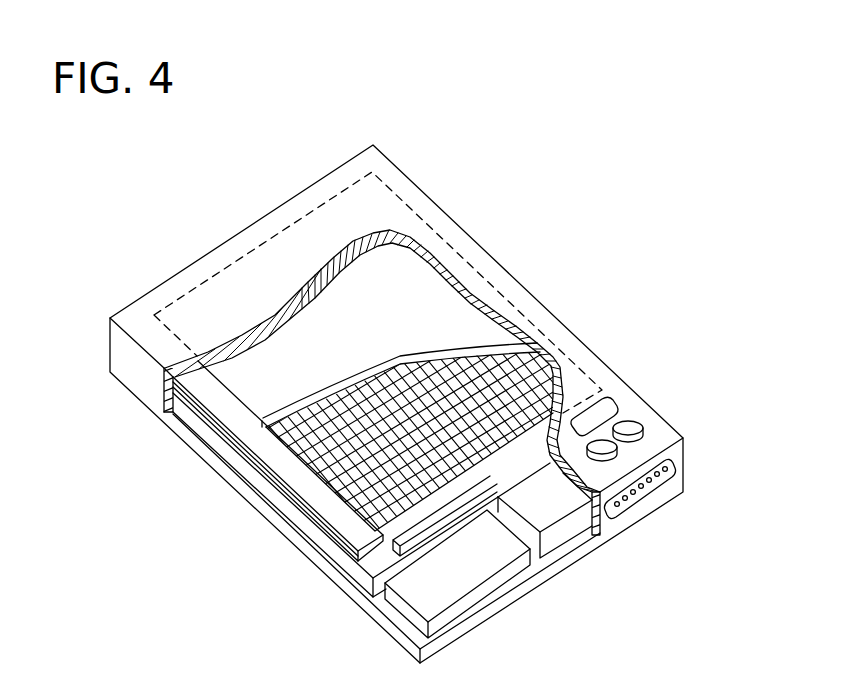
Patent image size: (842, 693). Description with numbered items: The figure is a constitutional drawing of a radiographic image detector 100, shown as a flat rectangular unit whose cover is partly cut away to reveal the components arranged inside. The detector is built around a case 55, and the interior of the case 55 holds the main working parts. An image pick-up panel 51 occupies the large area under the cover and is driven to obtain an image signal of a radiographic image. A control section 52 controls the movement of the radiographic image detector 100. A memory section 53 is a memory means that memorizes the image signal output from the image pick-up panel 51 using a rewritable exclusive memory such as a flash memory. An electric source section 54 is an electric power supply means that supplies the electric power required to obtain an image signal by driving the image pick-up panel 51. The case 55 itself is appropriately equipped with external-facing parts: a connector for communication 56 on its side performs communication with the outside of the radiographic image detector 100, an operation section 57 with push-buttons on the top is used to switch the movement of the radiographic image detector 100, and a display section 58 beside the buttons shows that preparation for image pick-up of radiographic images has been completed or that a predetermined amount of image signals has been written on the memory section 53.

The radiographic image detector 100 is at (530, 227).
The case 55 is at (420, 190).
The image pick-up panel 51 is at (228, 392).
The electric source section 54 is at (281, 500).
The memory section 53 is at (505, 580).
The control section 52 is at (572, 538).
The display section 58 is at (610, 402).
The operation section 57 is at (620, 450).
The connector for communication 56 is at (653, 492).